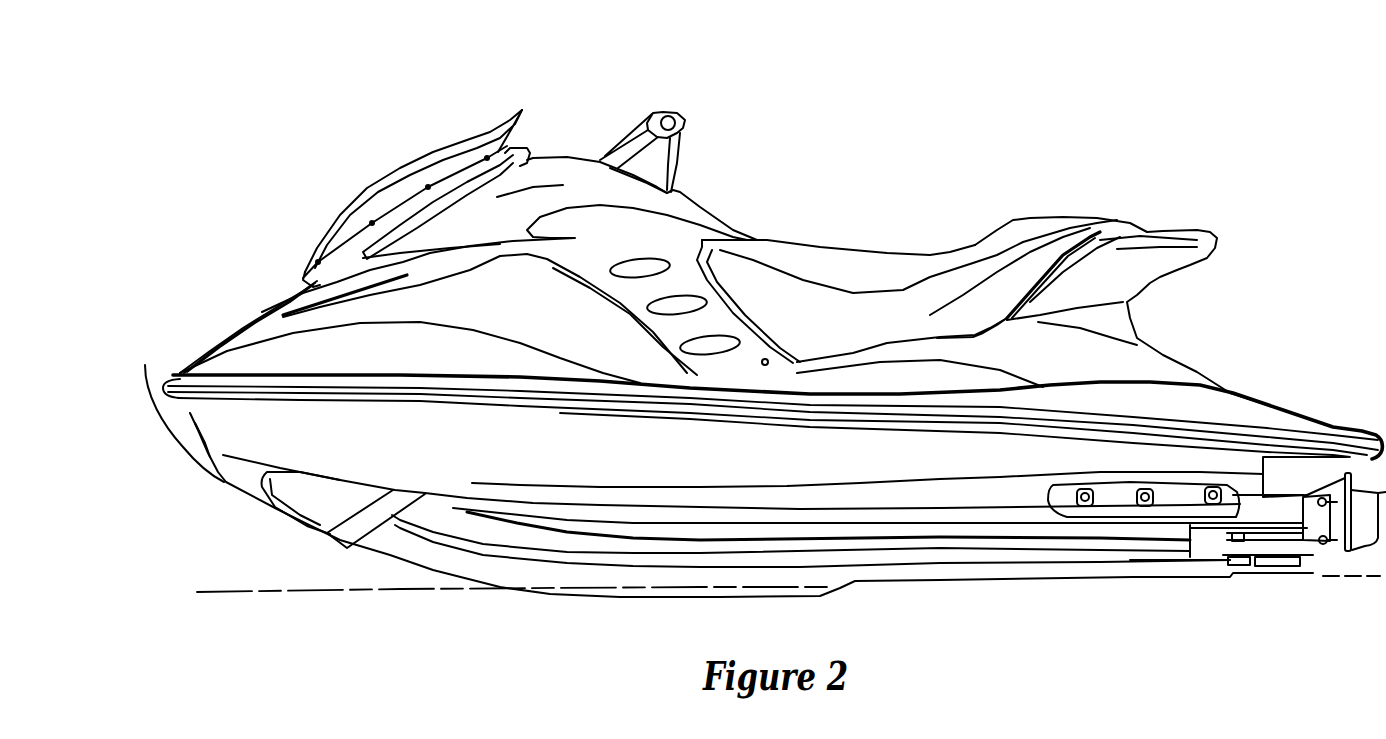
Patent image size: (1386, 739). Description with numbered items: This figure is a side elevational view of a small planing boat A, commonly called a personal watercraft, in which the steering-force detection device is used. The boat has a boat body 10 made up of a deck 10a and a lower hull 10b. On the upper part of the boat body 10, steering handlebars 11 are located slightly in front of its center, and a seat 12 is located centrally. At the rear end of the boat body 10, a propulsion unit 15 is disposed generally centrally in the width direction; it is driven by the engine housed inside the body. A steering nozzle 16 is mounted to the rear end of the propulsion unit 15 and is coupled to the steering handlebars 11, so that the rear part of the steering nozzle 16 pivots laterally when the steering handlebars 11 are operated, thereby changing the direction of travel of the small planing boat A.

The small planing boat A is at (1040, 108).
The boat body 10 is at (262, 277).
The deck 10a is at (240, 328).
The lower hull 10b is at (145, 365).
The steering handlebars 11 is at (652, 113).
The seat 12 is at (860, 266).
The propulsion unit 15 is at (1330, 543).
The steering nozzle 16 is at (1365, 542).